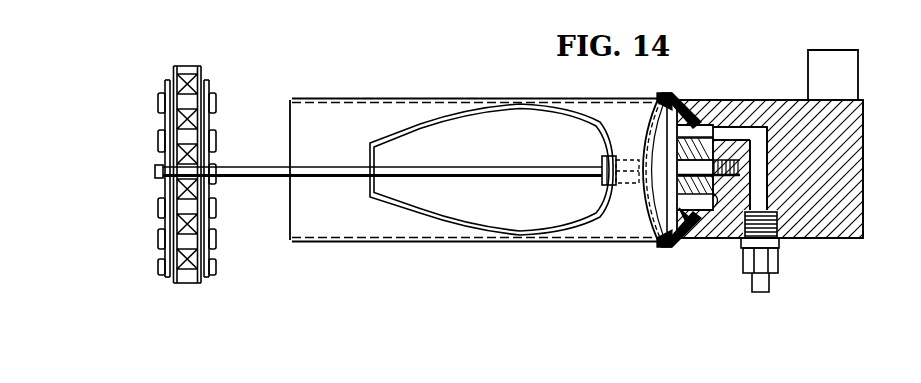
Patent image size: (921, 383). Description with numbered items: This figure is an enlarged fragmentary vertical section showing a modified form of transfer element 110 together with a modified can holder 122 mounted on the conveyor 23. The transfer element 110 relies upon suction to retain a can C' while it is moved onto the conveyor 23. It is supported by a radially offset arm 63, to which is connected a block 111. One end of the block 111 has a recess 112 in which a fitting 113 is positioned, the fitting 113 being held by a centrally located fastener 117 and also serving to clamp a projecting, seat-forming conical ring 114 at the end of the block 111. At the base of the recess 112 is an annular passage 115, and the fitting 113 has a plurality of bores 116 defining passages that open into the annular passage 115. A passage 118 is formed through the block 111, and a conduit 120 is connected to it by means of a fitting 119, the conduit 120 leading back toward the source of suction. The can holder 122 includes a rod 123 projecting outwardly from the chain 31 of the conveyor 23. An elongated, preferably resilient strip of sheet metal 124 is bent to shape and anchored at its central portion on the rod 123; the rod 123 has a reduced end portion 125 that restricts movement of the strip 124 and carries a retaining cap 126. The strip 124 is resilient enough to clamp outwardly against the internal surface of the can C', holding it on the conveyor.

The conveyor 23 is at (152, 130).
The chain 31 is at (162, 208).
The rod 123 is at (233, 165).
The can holder 122 is at (351, 181).
The can C is at (380, 98).
The strip of sheet metal 124 is at (440, 218).
The reduced end portion 125 is at (603, 152).
The retaining cap 126 is at (612, 190).
The conical ring 114 is at (666, 240).
The fastener 117 is at (651, 160).
The bores 116 is at (659, 99).
The recess 112 is at (700, 124).
The arm 63 is at (845, 62).
The transfer element 110 is at (781, 92).
The block 111 is at (866, 118).
The annular passage 115 is at (727, 126).
The passage 118 is at (763, 197).
The fitting 113 is at (707, 239).
The fitting 119 is at (742, 246).
The conduit 120 is at (763, 283).